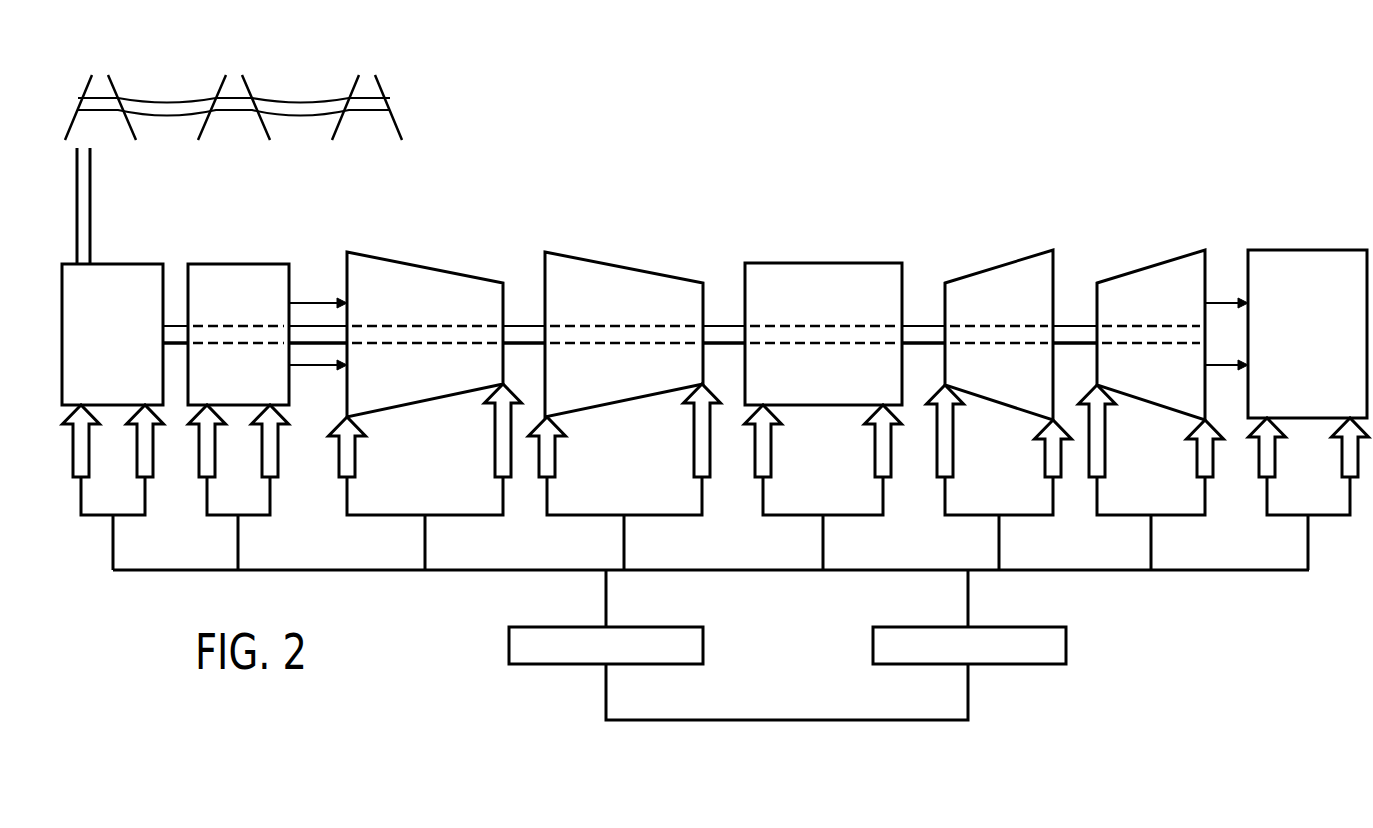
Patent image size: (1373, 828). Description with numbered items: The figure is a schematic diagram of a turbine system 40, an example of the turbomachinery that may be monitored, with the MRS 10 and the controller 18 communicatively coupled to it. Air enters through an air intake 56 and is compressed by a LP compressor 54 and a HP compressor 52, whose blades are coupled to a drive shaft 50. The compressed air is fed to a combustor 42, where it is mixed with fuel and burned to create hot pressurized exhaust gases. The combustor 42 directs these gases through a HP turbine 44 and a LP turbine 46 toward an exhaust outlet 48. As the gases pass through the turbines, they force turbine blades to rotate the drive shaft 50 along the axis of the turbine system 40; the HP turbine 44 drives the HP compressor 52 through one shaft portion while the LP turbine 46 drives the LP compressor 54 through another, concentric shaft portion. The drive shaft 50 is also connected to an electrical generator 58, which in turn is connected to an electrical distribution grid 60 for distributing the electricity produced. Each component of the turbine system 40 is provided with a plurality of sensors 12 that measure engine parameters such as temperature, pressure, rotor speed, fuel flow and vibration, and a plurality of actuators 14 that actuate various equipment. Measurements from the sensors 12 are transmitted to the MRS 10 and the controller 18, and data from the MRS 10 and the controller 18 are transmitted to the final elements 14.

The MRS 10 is at (1066, 645).
The sensors 12 is at (1289, 476).
The actuators 14 is at (1328, 476).
The controller 18 is at (703, 645).
The turbine system 40 is at (902, 118).
The combustor 42 is at (826, 263).
The HP turbine 44 is at (996, 267).
The LP turbine 46 is at (1149, 267).
The exhaust outlet 48 is at (1310, 250).
The drive shaft 50 is at (922, 326).
The HP compressor 52 is at (626, 267).
The LP compressor 54 is at (426, 267).
The air intake 56 is at (240, 264).
The electrical generator 58 is at (112, 264).
The electrical distribution grid 60 is at (400, 55).